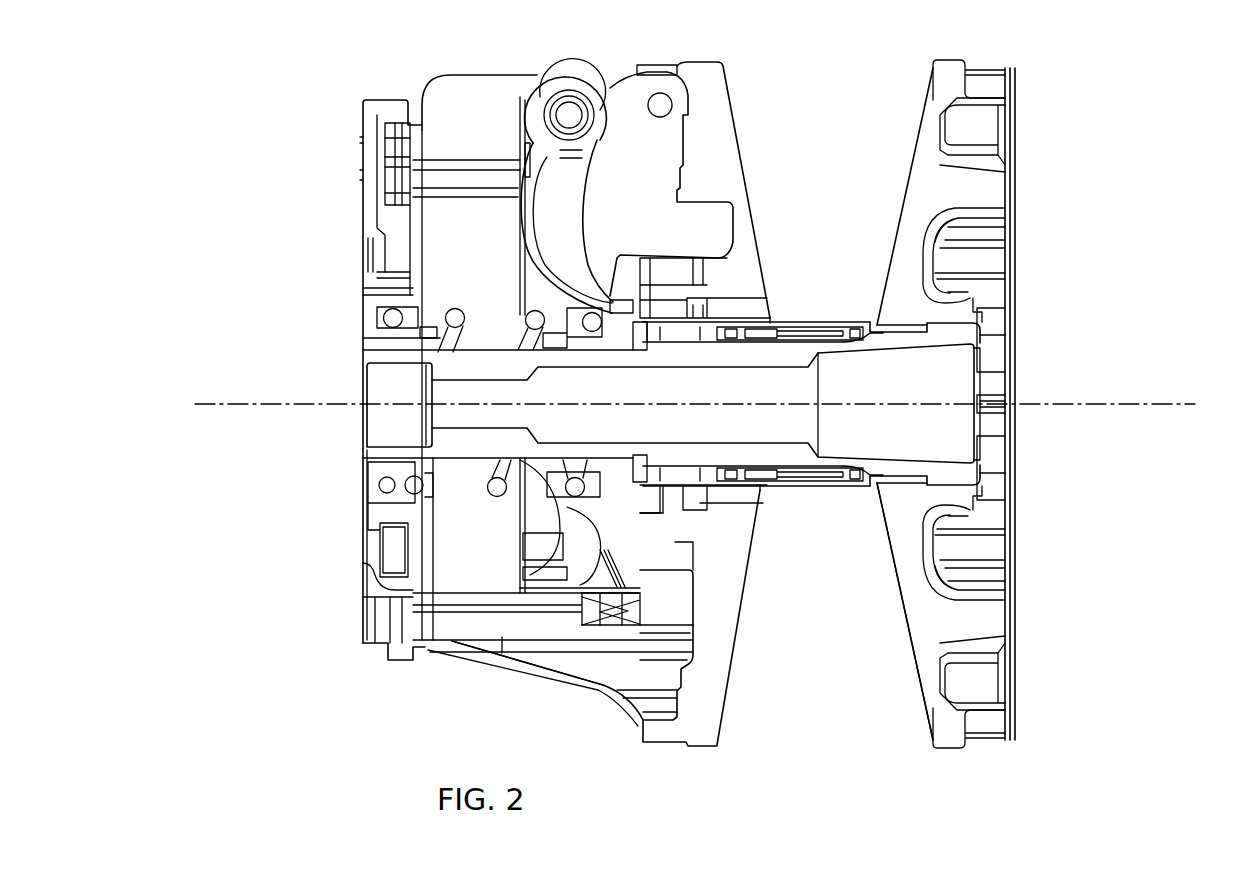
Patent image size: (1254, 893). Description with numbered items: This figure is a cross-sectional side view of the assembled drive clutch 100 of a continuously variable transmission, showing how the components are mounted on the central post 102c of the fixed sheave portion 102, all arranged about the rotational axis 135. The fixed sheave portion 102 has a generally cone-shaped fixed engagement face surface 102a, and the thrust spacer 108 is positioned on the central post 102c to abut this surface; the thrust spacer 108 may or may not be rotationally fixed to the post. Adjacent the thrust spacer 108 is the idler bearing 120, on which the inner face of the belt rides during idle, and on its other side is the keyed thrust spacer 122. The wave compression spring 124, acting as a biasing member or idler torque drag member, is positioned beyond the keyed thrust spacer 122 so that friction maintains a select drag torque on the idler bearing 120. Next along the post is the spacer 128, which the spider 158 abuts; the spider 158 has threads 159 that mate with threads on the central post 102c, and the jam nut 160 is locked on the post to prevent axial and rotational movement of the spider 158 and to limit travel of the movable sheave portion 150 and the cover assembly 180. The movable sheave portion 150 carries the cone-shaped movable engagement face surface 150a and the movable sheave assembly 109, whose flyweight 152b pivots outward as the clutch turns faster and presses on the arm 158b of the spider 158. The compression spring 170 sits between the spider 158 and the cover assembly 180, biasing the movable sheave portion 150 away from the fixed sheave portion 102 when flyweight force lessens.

The drive clutch 100 is at (1155, 91).
The fixed sheave portion 102 is at (987, 760).
The fixed engagement face surface 102a is at (922, 665).
The central post 102c is at (455, 445).
The thrust spacer 108 is at (872, 318).
The movable sheave assembly 109 is at (484, 50).
The idler bearing 120 is at (837, 490).
The keyed thrust spacer 122 is at (760, 327).
The wave compression spring 124 is at (745, 490).
The spacer 128 is at (640, 483).
The rotational axis 135 is at (1082, 400).
The movable sheave portion 150 is at (650, 762).
The movable engagement face surface 150a is at (727, 700).
The flyweight 152b is at (680, 160).
The spider 158 is at (540, 568).
The arm 158b is at (568, 75).
The threads 159 is at (633, 349).
The jam nut 160 is at (400, 357).
The compression spring 170 is at (400, 319).
The cover assembly 180 is at (372, 211).